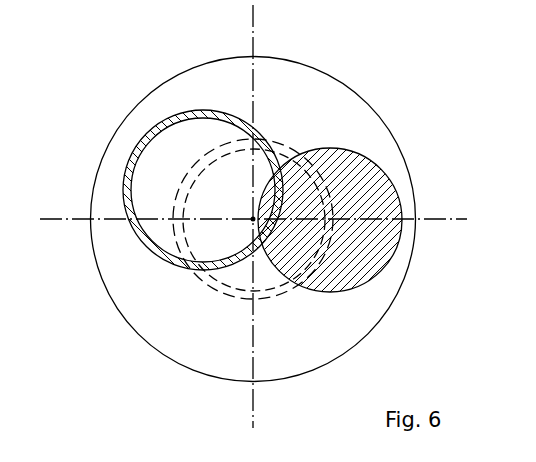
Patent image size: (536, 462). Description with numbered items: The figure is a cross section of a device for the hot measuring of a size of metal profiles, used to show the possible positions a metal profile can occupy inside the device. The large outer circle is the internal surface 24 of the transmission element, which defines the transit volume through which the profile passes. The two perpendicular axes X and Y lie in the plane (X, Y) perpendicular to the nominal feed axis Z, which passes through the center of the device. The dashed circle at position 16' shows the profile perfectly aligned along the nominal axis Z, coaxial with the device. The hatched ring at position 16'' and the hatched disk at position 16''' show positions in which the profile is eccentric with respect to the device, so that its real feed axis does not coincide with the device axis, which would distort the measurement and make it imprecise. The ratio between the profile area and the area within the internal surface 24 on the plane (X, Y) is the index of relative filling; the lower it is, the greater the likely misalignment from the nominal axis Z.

The internal surface 24 is at (187, 70).
The position of the metal profile aligned along the nominal axis 16' is at (291, 174).
The eccentric position of the metal profile 16'' is at (169, 195).
The eccentric position of the metal profile 16''' is at (378, 231).
The X axis of the plane perpendicular to the nominal axis X is at (441, 220).
The Y axis of the plane perpendicular to the nominal axis Y is at (253, 32).
The nominal feed axis Z is at (253, 219).